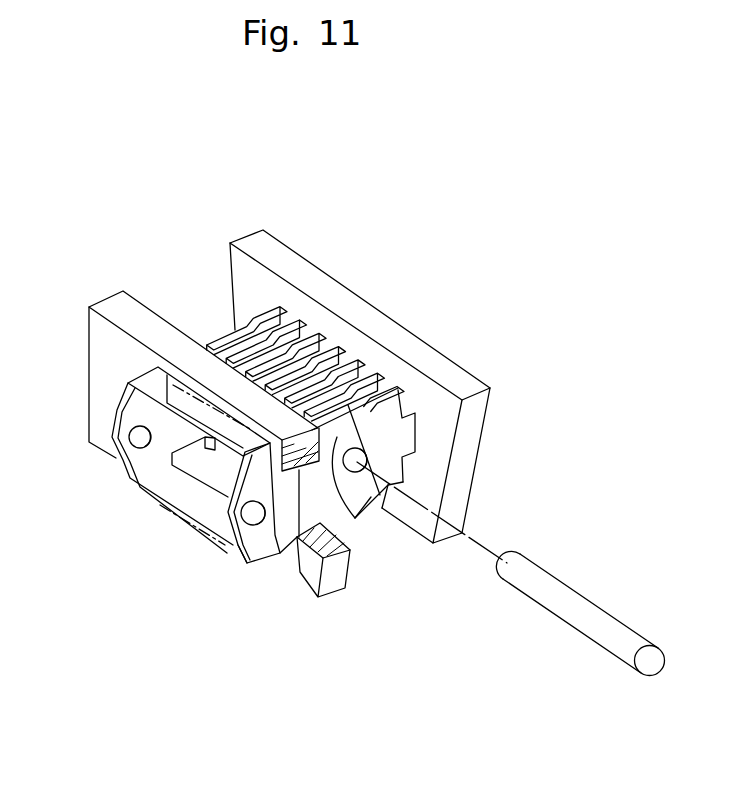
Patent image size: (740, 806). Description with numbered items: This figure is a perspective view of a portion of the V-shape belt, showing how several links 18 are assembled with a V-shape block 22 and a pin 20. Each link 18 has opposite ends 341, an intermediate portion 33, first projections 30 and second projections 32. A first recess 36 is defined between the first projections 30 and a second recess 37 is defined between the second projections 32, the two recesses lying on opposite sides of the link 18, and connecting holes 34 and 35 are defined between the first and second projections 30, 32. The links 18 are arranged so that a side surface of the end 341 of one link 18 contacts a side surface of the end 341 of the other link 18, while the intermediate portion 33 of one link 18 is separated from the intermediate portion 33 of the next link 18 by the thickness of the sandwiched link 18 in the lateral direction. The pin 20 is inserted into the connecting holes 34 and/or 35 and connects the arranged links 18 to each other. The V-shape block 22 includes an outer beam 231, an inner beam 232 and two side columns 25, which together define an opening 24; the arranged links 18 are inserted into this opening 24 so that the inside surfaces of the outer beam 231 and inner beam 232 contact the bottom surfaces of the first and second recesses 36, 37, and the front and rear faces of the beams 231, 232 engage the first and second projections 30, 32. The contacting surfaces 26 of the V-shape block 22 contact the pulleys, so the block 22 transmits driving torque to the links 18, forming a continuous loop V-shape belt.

The link 18 is at (328, 645).
The pin 20 is at (562, 593).
The V-shape block 22 is at (145, 330).
The opening 24 is at (410, 462).
The side column 25 is at (243, 272).
The contacting surface 26 is at (453, 507).
The first projection 30 is at (339, 503).
The second projection 32 is at (247, 563).
The intermediate portion 33 is at (283, 560).
The connecting hole 34 is at (237, 523).
The connecting hole 35 is at (371, 497).
The first recess 36 is at (243, 548).
The second recess 37 is at (262, 556).
The outer beam 231 is at (332, 322).
The inner beam 232 is at (411, 518).
The end 341 is at (399, 385).